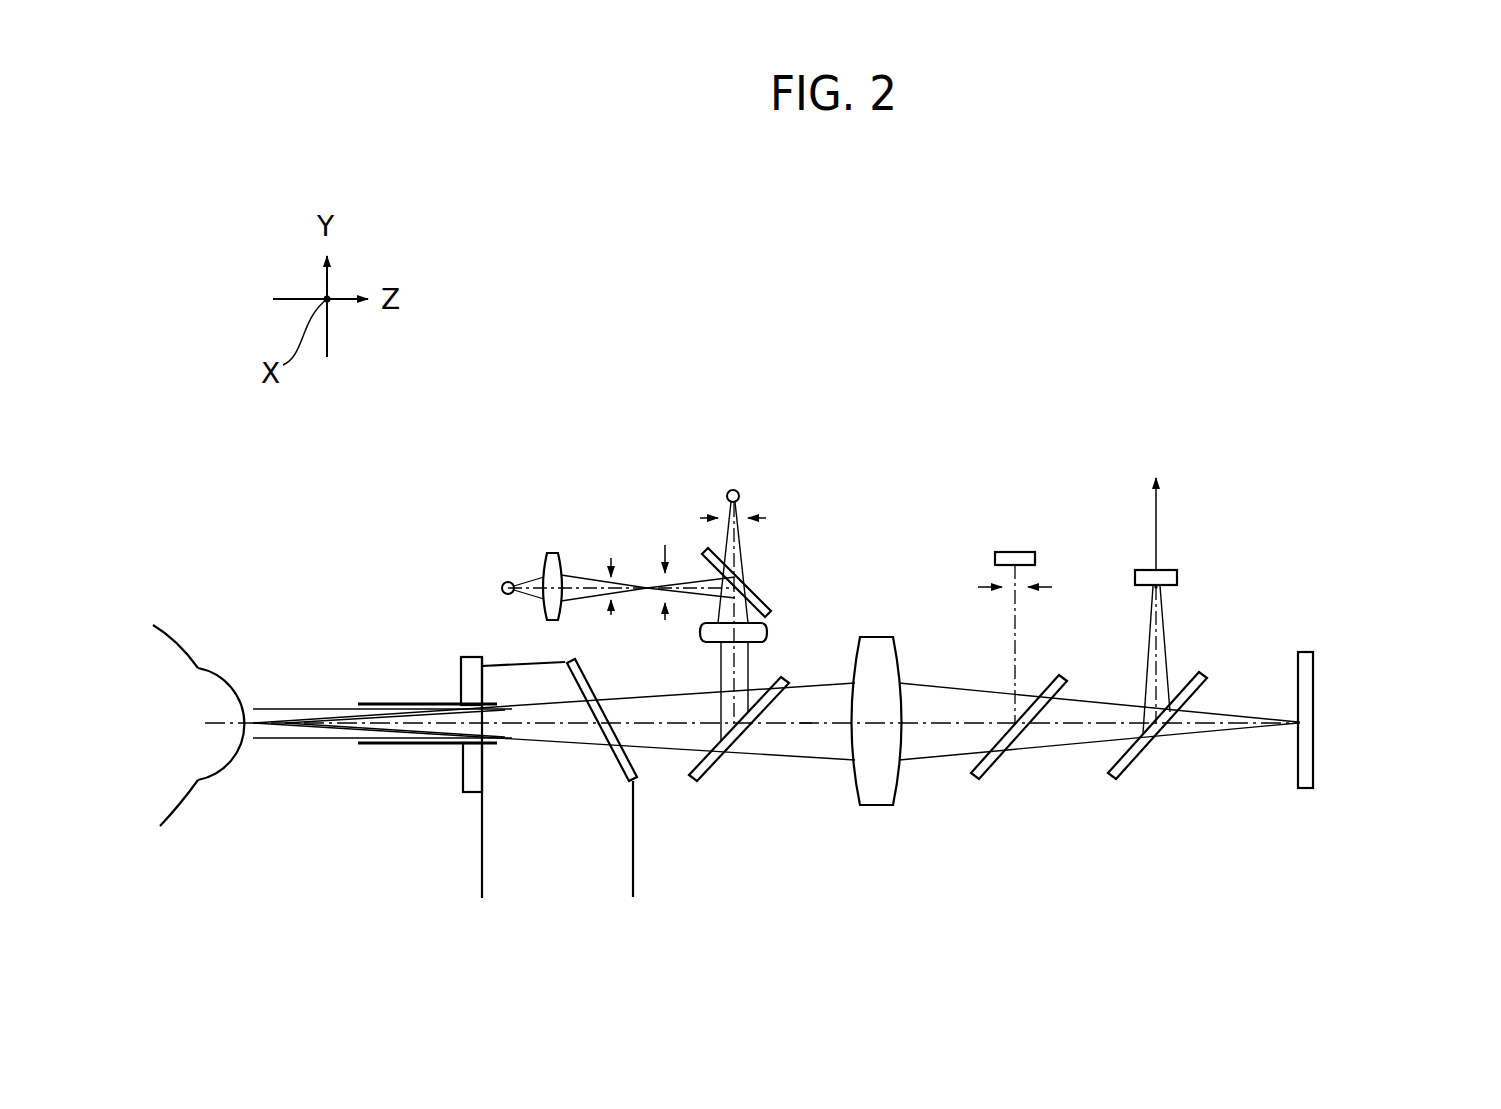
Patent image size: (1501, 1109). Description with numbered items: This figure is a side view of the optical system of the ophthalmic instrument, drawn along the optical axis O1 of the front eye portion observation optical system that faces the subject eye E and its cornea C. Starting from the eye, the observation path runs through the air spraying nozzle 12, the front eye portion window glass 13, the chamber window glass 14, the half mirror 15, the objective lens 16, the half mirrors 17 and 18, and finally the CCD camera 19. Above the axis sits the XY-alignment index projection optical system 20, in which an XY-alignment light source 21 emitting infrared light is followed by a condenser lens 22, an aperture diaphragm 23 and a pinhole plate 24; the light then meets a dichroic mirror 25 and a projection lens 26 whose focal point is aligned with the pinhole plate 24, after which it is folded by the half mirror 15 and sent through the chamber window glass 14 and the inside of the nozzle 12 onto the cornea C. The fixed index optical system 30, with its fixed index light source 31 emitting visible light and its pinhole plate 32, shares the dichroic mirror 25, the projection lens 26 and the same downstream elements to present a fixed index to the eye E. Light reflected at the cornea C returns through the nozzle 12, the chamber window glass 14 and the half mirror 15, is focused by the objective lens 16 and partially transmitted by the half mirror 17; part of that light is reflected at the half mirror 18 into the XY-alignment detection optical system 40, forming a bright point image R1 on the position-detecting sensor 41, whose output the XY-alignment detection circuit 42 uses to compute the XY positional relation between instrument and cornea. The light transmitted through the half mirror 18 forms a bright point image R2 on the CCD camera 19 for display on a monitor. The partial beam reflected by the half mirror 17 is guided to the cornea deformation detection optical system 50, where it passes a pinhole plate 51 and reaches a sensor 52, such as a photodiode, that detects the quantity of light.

The subject eye E is at (186, 622).
The cornea C is at (245, 687).
The air spraying nozzle 12 is at (391, 703).
The front eye portion window glass 13 is at (470, 657).
The chamber window glass 14 is at (580, 682).
The half mirror 15 is at (706, 763).
The objective lens 16 is at (882, 637).
The half mirror 17 is at (983, 763).
The half mirror 18 is at (1133, 762).
The CCD camera 19 is at (1298, 770).
The optical axis O1 is at (812, 831).
The XY-alignment index projection optical system 20 is at (565, 472).
The XY-alignment light source 21 is at (504, 582).
The condenser lens 22 is at (548, 554).
The aperture diaphragm 23 is at (611, 558).
The pinhole plate 24 is at (665, 545).
The dichroic mirror 25 is at (768, 607).
The projection lens 26 is at (767, 632).
The fixed index optical system 30 is at (806, 447).
The fixed index light source 31 is at (736, 490).
The pinhole plate 32 is at (766, 518).
The XY-alignment detection optical system 40 is at (1272, 573).
The sensor 41 is at (1178, 578).
The bright point image R1 is at (1160, 590).
The bright point image R2 is at (1298, 716).
The XY-alignment detection circuit 42 is at (1264, 507).
The cornea deformation detection optical system 50 is at (979, 528).
The pinhole plate 51 is at (1035, 585).
The sensor 52 is at (1027, 552).